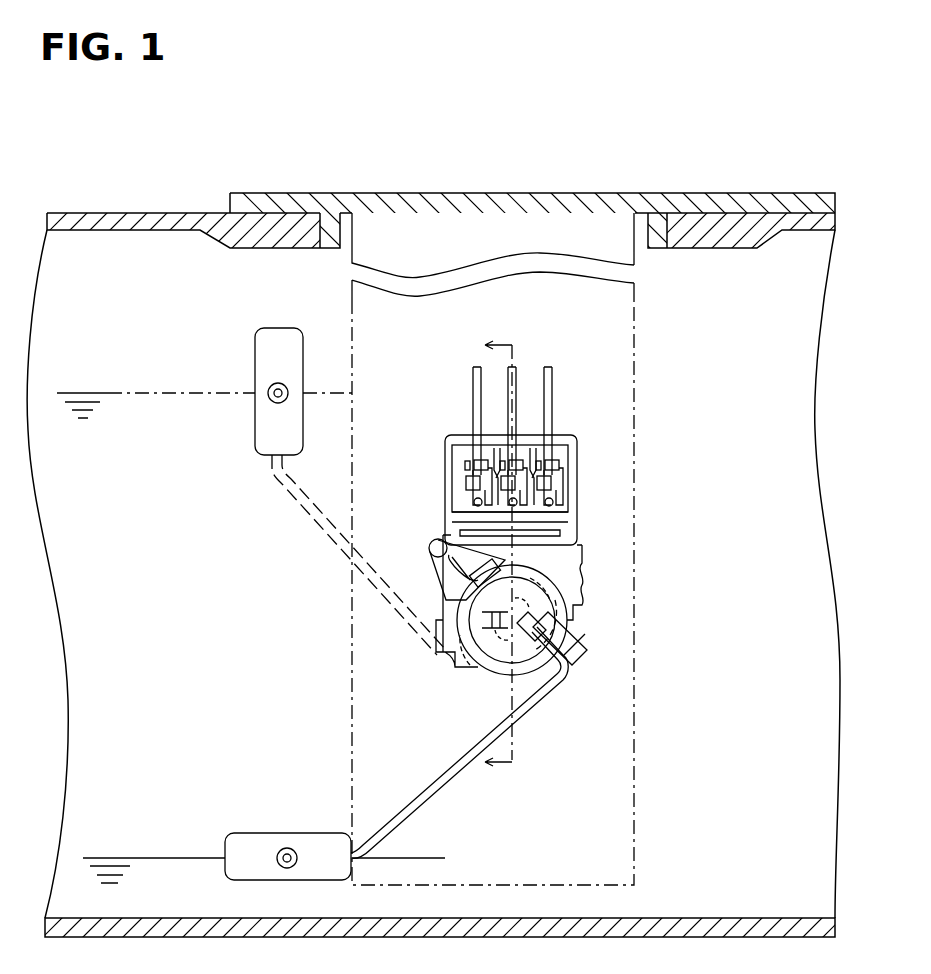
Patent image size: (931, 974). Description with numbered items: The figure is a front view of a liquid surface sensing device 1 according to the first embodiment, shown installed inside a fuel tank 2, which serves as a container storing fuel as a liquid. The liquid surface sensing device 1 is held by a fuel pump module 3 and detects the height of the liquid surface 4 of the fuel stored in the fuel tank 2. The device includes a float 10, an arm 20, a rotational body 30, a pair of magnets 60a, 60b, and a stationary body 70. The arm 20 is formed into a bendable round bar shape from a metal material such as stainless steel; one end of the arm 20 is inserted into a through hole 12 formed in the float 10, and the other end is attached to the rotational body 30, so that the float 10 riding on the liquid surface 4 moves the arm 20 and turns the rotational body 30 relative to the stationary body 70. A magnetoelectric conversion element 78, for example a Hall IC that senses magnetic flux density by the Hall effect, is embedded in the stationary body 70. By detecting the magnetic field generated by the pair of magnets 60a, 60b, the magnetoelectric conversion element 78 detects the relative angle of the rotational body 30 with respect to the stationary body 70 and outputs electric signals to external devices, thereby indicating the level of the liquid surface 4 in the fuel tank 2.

The liquid surface sensing device 1 is at (582, 410).
The fuel tank 2 is at (97, 218).
The fuel pump module 3 is at (668, 320).
The liquid surface 4 is at (88, 393).
The float 10 is at (292, 847).
The through hole 12 is at (278, 858).
The arm 20 is at (548, 703).
The rotational body 30 is at (567, 620).
The magnet 60a is at (565, 620).
The magnet 60b is at (470, 668).
The stationary body 70 is at (578, 465).
The magnetoelectric conversion element 78 is at (440, 660).